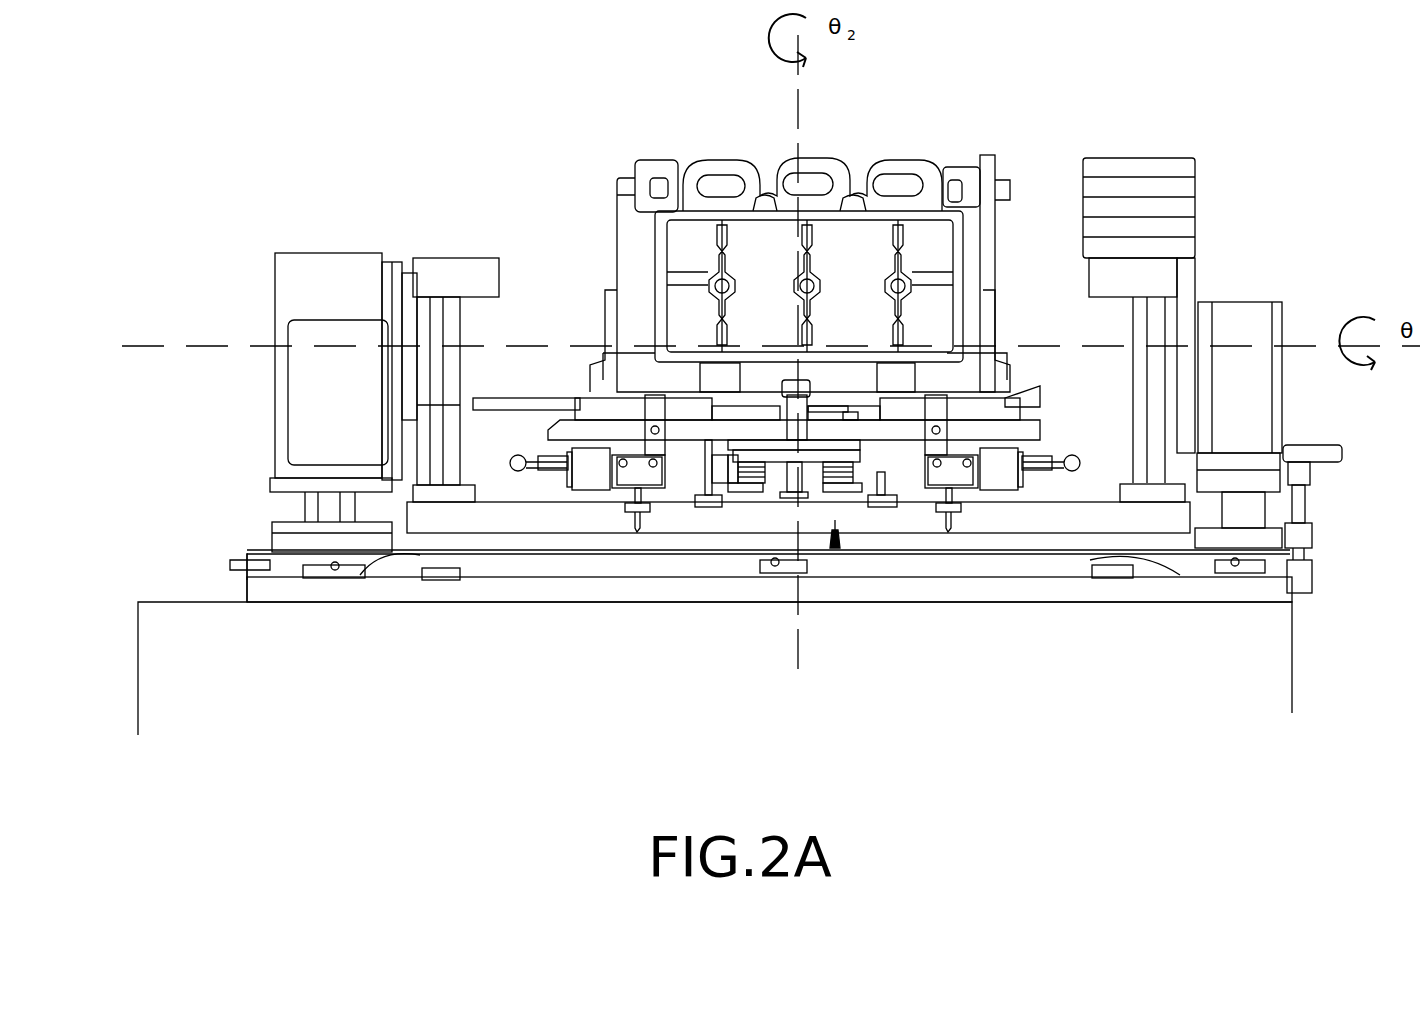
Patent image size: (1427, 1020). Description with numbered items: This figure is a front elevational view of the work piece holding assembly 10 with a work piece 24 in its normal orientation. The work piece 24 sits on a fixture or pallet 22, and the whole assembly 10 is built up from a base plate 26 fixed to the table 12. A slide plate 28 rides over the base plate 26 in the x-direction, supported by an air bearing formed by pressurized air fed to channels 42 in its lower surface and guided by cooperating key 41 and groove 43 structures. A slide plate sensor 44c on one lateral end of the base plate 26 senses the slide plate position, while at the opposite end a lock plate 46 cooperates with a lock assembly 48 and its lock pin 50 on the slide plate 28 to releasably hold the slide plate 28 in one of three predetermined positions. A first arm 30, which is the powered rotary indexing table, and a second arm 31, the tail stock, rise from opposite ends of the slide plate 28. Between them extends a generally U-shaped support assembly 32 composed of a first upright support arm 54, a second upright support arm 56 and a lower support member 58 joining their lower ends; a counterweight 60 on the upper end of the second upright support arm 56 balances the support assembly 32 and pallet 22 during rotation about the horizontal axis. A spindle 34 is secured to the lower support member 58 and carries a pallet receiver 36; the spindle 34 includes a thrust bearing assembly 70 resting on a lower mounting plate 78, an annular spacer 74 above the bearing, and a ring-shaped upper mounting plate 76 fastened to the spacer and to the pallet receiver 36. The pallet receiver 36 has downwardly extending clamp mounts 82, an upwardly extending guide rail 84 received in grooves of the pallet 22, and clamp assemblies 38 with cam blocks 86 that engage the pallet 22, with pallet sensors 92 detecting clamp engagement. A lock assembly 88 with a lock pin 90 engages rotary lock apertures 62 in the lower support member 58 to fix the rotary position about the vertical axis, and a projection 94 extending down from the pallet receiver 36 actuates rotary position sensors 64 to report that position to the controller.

The work piece holding assembly 10 is at (308, 215).
The table 12 is at (165, 602).
The pallet 22 is at (705, 470).
The work piece 24 is at (815, 160).
The base plate 26 is at (538, 595).
The slide plate 28 is at (960, 565).
The first arm 30 is at (290, 307).
The second arm 31 is at (1262, 325).
The support assembly 32 is at (528, 272).
The spindle 34 is at (838, 535).
The pallet receiver 36 is at (1040, 432).
The clamp assemblies 38 is at (622, 478).
The key 41 is at (450, 580).
The channels 42 is at (325, 575).
The groove 43 is at (400, 558).
The slide plate sensor 44c is at (240, 562).
The lock plate 46 is at (1302, 580).
The lock assembly 48 is at (1310, 535).
The lock pin 50 is at (1320, 450).
The first upright support arm 54 is at (420, 408).
The second upright support arm 56 is at (1160, 437).
The lower support member 58 is at (1020, 580).
The counterweight 60 is at (1188, 163).
The rotary lock apertures 62 is at (708, 500).
The rotary position sensors 64 is at (775, 480).
The thrust bearing assembly 70 is at (725, 468).
The annular spacer 74 is at (845, 500).
The upper mounting plate 76 is at (845, 455).
The lower mounting plate 78 is at (815, 500).
The clamp mounts 82 is at (600, 480).
The guide rail 84 is at (852, 425).
The cam blocks 86 is at (578, 398).
The lock assembly 88 is at (805, 392).
The lock pin 90 is at (750, 490).
The pallet sensors 92 is at (632, 504).
The projection 94 is at (735, 492).